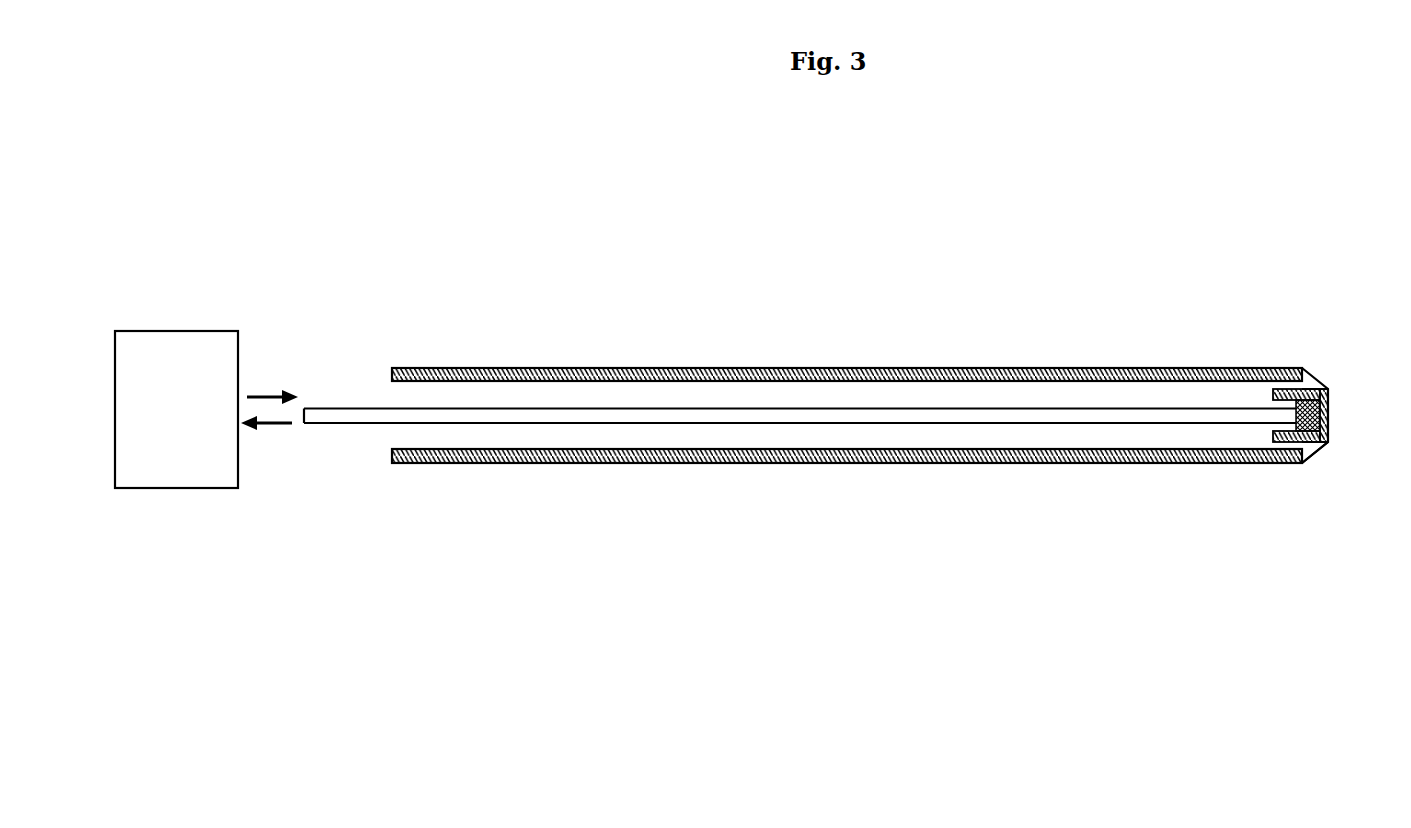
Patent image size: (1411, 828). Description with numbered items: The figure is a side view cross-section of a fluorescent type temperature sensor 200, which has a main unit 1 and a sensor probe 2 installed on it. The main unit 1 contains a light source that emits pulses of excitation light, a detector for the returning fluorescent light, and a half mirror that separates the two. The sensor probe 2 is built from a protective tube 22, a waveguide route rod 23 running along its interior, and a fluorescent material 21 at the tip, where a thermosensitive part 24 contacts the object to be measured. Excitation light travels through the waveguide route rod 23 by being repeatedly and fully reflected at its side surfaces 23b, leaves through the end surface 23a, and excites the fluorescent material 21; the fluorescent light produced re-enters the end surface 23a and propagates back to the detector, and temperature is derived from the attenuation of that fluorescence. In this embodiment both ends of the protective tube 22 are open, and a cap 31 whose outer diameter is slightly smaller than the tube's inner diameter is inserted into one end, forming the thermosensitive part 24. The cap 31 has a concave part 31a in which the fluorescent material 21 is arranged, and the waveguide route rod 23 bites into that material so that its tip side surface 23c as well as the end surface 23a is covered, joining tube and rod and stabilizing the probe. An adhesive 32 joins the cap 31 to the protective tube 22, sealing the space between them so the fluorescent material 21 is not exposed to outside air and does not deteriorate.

The temperature sensor 200 is at (245, 204).
The main unit 1 is at (210, 338).
The sensor probe 2 is at (1068, 245).
The protective tube 22 is at (1088, 369).
The waveguide route rod 23 is at (800, 409).
The side surface 23b is at (1027, 407).
The thermosensitive part 24 is at (1330, 365).
The fluorescent material 21 is at (1328, 390).
The cap 31 is at (1330, 420).
The adhesive 32 is at (1320, 445).
The end surface 23a is at (1327, 401).
The tip side surface 23c is at (1285, 452).
The concave part 31a is at (1305, 443).